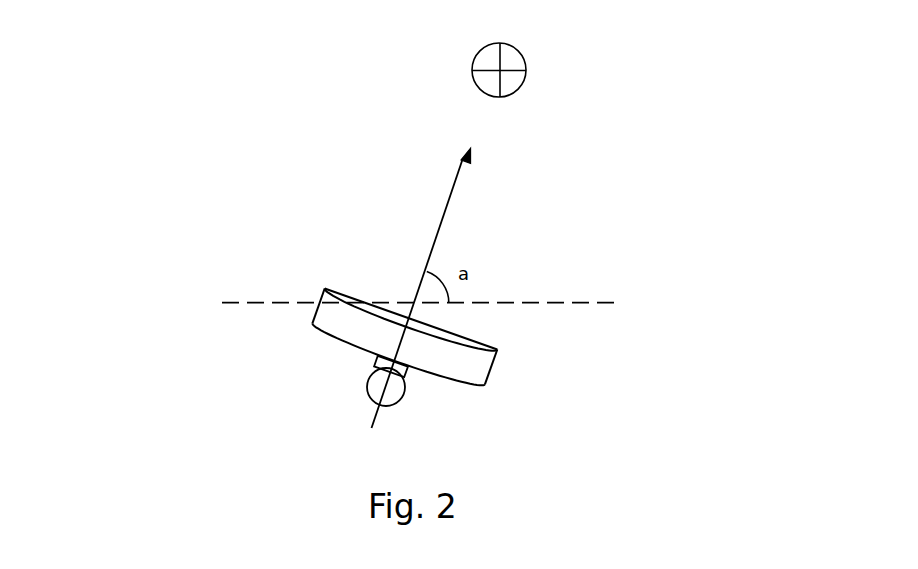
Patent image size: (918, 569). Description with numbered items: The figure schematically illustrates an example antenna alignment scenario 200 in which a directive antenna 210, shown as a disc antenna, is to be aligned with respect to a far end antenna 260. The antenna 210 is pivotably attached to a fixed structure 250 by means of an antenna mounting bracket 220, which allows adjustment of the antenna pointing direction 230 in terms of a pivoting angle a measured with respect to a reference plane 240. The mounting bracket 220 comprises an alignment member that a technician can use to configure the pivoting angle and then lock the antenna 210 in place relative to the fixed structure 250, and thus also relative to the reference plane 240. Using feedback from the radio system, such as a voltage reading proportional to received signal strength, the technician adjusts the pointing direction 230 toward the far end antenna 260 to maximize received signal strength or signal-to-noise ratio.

The antenna alignment scenario 200 is at (99, 202).
The directive antenna 210 is at (312, 322).
The antenna mounting bracket 220 is at (425, 400).
The antenna pointing direction 230 is at (421, 288).
The reference plane 240 is at (421, 289).
The fixed structure 250 is at (367, 389).
The far end antenna 260 is at (527, 83).